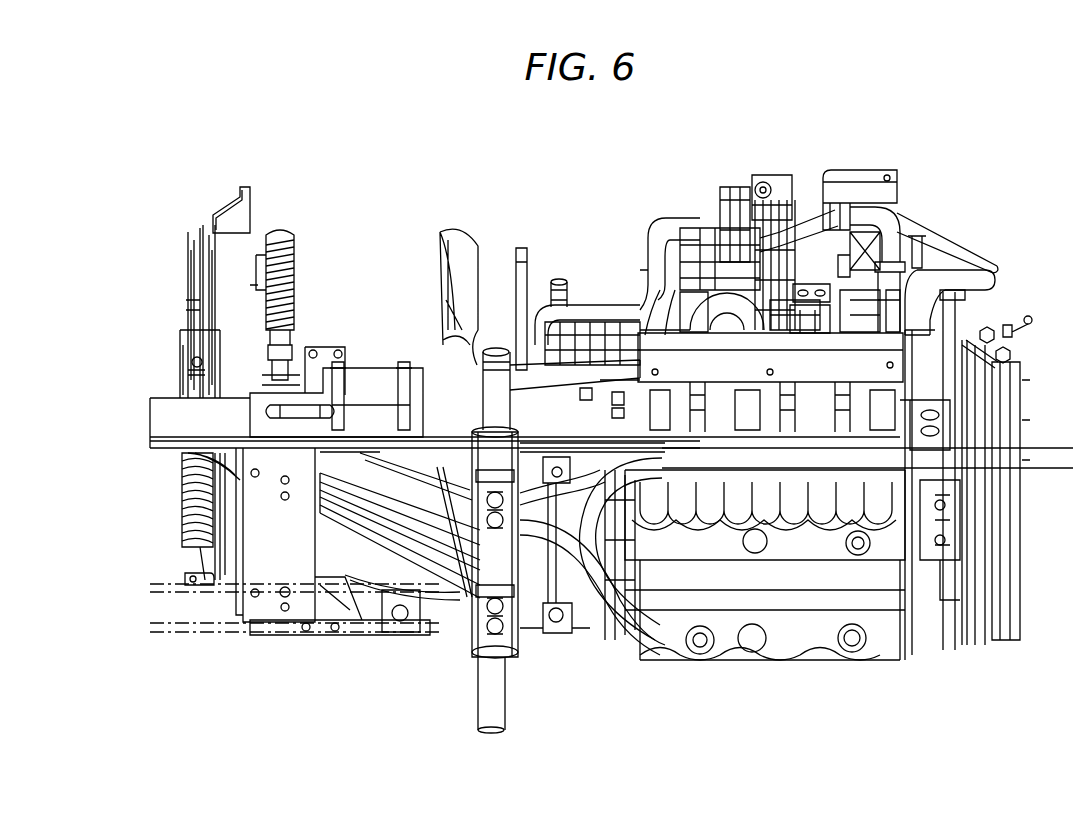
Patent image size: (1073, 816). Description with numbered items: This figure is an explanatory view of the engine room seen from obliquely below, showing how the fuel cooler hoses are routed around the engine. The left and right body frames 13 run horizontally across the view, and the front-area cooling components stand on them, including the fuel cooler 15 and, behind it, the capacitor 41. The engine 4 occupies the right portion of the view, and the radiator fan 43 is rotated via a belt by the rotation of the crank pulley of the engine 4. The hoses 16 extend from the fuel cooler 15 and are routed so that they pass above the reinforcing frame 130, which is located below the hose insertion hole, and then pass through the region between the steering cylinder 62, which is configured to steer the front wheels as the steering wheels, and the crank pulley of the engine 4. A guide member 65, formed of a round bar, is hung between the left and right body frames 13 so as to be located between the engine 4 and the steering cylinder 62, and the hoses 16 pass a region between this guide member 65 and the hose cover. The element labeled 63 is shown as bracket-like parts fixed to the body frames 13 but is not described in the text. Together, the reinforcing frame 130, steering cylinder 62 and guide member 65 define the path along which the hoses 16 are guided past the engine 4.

The engine 4 is at (906, 201).
The body frame 13 is at (166, 410).
The fuel cooler 15 is at (185, 228).
The hoses 16 is at (360, 528).
The capacitor 41 is at (277, 235).
The radiator fan 43 is at (443, 240).
The steering cylinder 62 is at (498, 570).
The bracket 63 is at (373, 412).
The guide member 65 is at (550, 535).
The reinforcing frame 130 is at (260, 558).